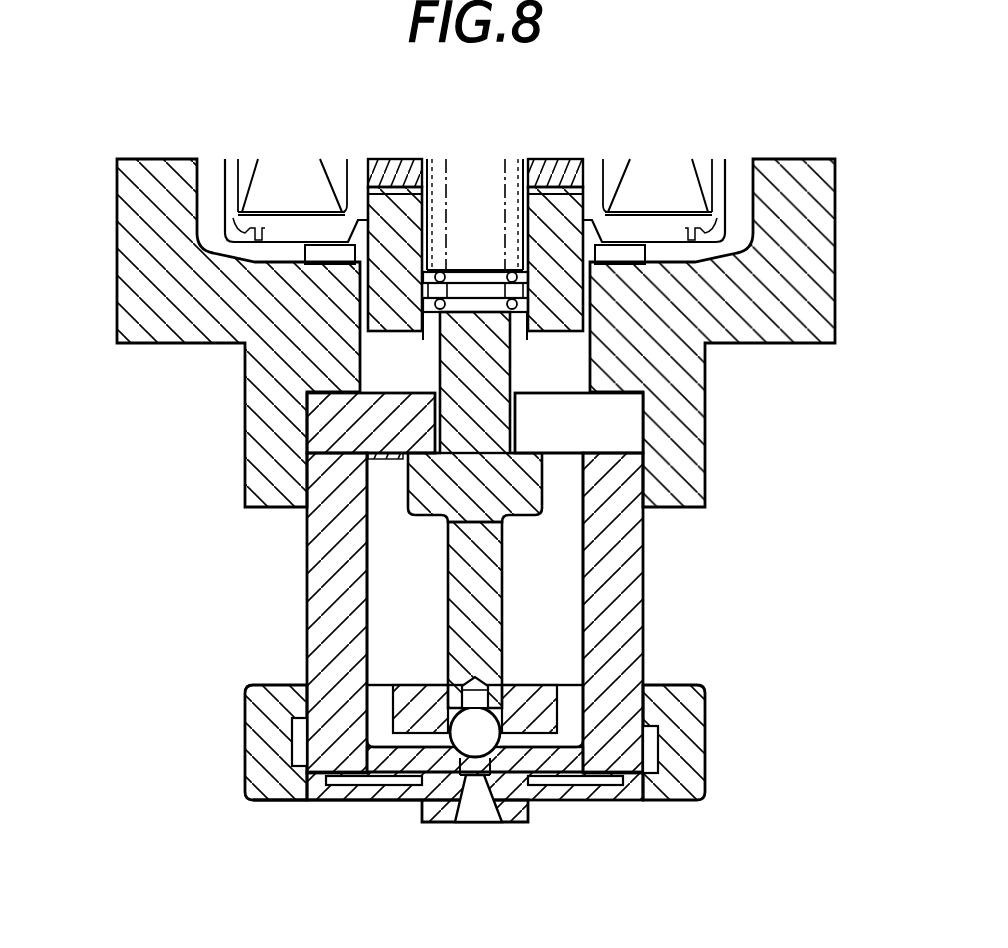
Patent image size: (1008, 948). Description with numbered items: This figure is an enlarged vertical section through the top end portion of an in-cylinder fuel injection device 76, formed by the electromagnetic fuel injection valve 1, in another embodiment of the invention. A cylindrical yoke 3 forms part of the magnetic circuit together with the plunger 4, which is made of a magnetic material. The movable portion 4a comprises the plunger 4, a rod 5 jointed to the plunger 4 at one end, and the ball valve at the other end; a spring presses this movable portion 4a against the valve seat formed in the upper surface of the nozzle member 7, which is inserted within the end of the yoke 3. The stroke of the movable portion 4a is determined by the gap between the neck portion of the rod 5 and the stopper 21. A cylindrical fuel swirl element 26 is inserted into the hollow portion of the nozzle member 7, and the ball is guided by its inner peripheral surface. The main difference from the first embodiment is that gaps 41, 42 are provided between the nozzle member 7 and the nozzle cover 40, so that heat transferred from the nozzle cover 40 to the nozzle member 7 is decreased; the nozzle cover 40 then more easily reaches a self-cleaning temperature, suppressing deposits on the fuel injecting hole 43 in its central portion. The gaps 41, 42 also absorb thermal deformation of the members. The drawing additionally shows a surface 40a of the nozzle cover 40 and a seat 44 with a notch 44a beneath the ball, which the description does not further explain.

The electromagnetic fuel injection valve 1 is at (557, 160).
The cylindrical yoke 3 is at (130, 303).
The plunger 4 is at (380, 318).
The movable portion 4a is at (555, 590).
The rod 5 is at (447, 547).
The nozzle member 7 is at (305, 613).
The stopper surface 21 is at (323, 437).
The cylindrical fuel swirl element 26 is at (530, 683).
The nozzle cover 40 is at (697, 715).
The bottom surface of base plate 40a is at (300, 802).
The gap 41 is at (302, 740).
The gap 42 is at (365, 802).
The fuel injecting hole 43 is at (475, 800).
The ball seat 44 is at (502, 822).
The seat notch 44a is at (433, 822).
The fuel injection device 76 is at (837, 292).